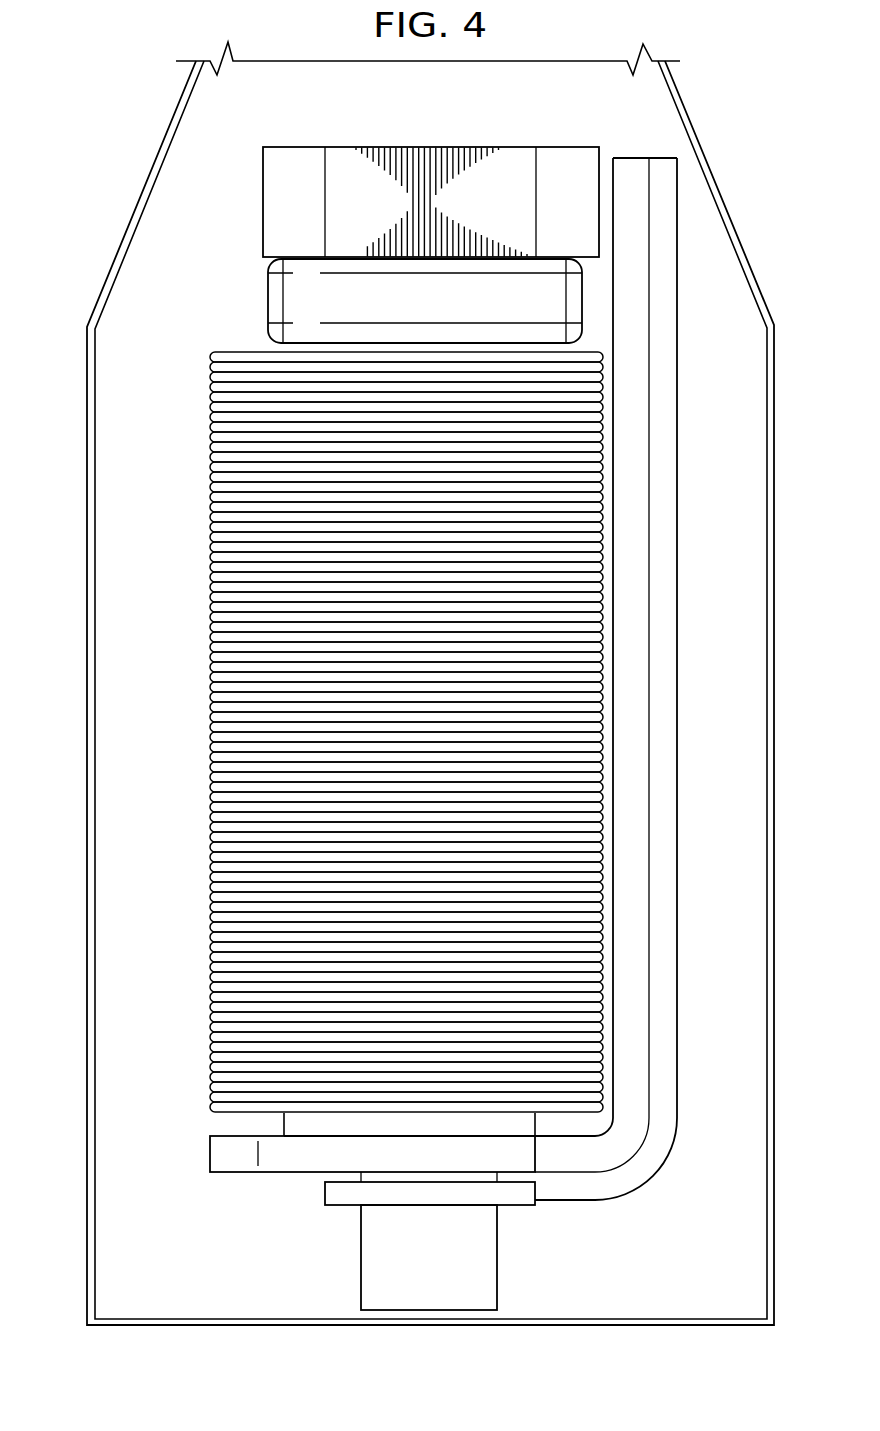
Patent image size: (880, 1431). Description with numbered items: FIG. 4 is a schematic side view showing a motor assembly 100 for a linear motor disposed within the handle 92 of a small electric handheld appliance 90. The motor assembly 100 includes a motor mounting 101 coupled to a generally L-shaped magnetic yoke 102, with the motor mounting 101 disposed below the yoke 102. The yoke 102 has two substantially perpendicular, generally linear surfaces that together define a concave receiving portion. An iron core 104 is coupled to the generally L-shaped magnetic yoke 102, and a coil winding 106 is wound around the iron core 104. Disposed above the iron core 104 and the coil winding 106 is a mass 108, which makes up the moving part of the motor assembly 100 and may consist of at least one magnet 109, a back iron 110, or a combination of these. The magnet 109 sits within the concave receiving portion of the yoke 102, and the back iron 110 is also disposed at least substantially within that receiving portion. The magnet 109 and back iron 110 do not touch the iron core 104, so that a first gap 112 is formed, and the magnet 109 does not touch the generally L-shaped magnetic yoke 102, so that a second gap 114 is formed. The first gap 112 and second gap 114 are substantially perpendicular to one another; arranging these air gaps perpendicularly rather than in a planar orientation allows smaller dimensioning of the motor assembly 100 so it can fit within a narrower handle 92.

The small electric handheld appliance 90 is at (95, 122).
The handle 92 is at (112, 242).
The motor assembly 100 is at (355, 814).
The motor mounting 101 is at (325, 1192).
The generally L-shaped magnetic yoke 102 is at (677, 657).
The iron core 104 is at (283, 1120).
The coil winding 106 is at (210, 752).
The mass 108 is at (393, 218).
The magnet 109 is at (267, 298).
The back iron 110 is at (567, 145).
The first gap 112 is at (288, 347).
The second gap 114 is at (606, 162).